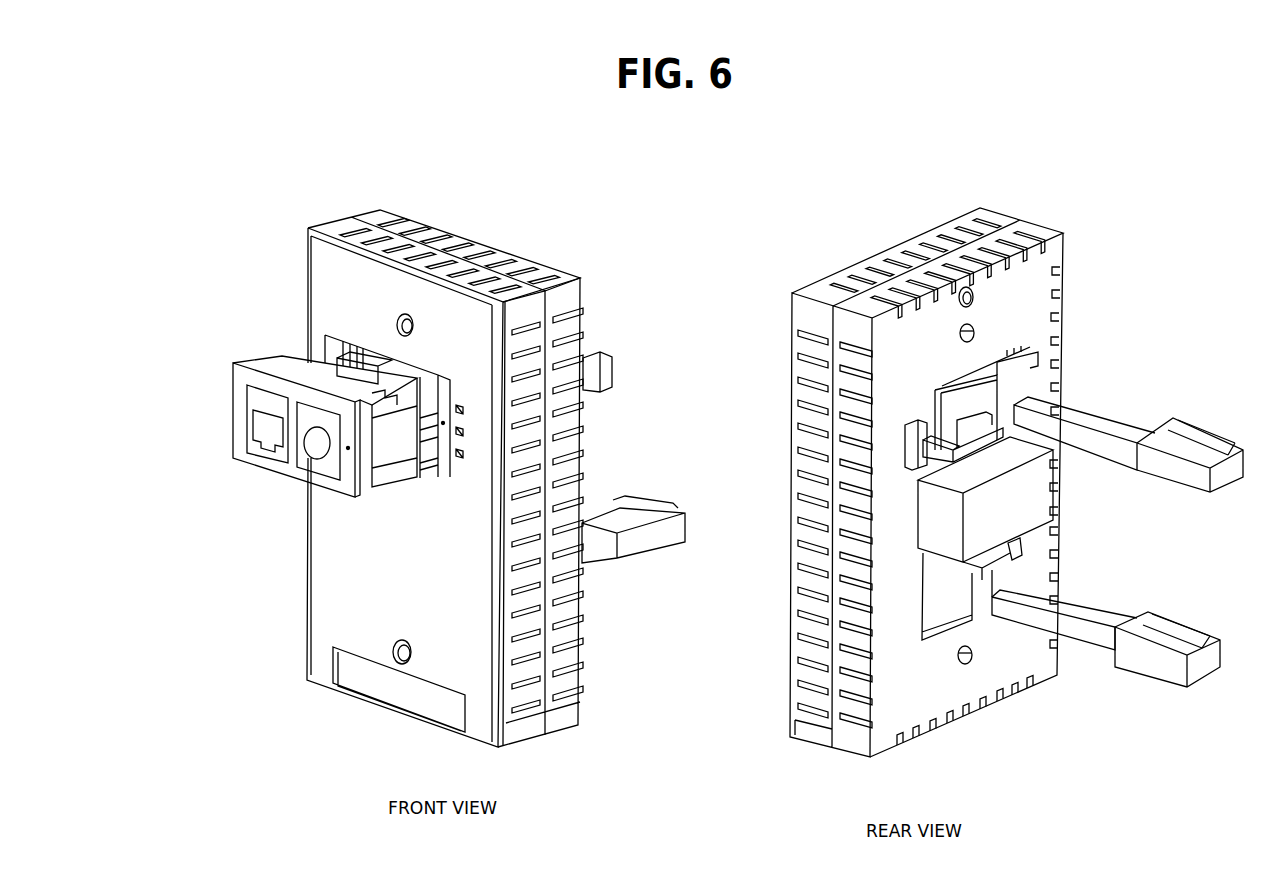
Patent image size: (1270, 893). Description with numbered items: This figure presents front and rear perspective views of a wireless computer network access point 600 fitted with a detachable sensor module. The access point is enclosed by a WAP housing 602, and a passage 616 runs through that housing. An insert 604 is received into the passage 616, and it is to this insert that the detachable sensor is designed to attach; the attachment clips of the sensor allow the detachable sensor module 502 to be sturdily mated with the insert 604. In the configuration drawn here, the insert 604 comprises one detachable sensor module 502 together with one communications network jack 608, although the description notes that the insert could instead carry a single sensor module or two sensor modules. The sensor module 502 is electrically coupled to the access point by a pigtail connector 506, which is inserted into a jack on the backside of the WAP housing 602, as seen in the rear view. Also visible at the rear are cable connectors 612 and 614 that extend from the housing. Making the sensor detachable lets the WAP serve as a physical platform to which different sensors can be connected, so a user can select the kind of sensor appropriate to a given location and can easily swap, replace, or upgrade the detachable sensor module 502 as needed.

The wall plate assembly 600 is at (653, 150).
The WAP housing 602 is at (322, 213).
The insert 604 is at (240, 362).
The communications network jack 608 is at (246, 459).
The detachable sensor module 502 is at (316, 448).
The passage 616 is at (335, 344).
The pigtail connector 506 is at (973, 445).
The cable connector 612 is at (1118, 404).
The cable connector 614 is at (1099, 608).